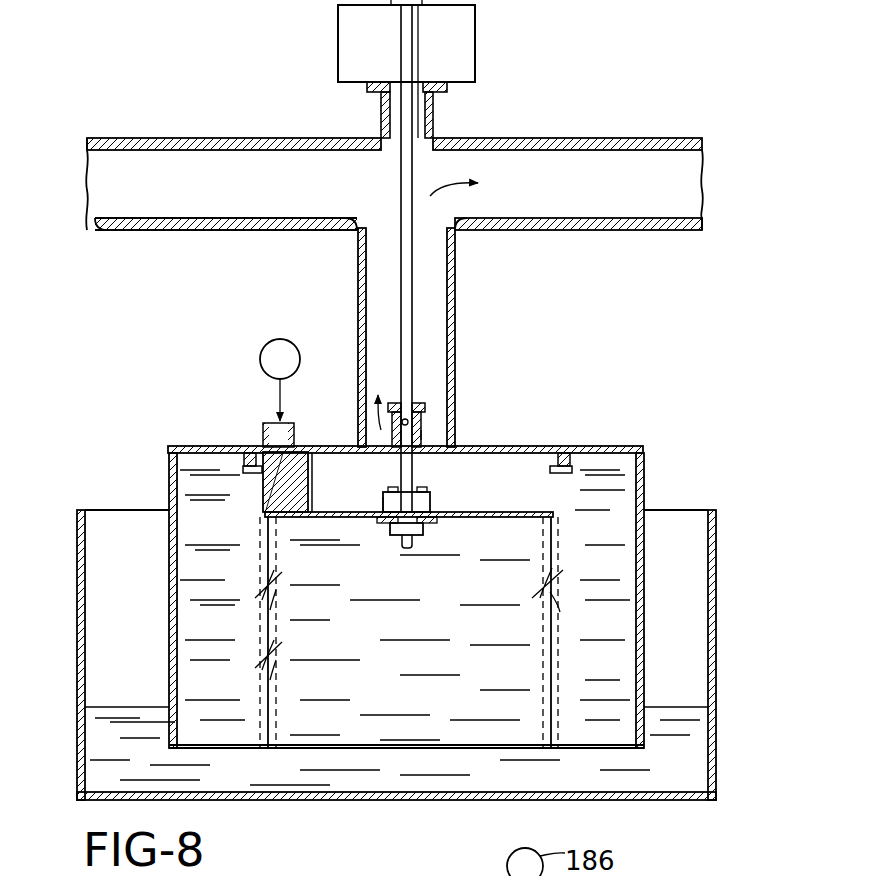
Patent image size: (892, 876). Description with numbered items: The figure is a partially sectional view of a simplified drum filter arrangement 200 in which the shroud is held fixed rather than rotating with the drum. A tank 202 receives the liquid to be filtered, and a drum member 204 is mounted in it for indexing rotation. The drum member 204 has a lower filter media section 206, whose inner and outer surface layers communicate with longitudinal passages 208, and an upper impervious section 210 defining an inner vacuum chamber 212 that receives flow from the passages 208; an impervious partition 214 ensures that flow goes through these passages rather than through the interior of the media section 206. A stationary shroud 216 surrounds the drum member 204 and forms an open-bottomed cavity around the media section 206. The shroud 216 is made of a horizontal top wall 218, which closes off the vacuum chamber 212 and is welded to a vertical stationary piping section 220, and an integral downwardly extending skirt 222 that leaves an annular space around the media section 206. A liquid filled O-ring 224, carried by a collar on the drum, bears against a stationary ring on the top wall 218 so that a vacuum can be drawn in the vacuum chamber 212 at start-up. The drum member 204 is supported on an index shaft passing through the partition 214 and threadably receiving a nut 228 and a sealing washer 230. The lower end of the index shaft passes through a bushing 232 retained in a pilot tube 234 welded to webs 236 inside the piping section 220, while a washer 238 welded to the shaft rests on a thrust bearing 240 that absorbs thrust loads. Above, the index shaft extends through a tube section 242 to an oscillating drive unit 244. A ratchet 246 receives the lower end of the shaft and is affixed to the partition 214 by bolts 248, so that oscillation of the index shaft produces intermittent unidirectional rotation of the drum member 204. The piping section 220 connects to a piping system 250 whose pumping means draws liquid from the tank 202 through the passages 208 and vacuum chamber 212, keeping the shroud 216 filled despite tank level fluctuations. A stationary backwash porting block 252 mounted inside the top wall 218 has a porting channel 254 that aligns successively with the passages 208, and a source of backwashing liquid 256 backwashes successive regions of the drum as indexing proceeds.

The drum filter arrangement 200 is at (127, 453).
The tank 202 is at (74, 540).
The drum member 204 is at (557, 668).
The lower filter media section 206 is at (555, 631).
The longitudinal passages 208 is at (550, 738).
The upper impervious section 210 is at (558, 501).
The inner vacuum chamber 212 is at (543, 500).
The impervious partition 214 is at (325, 512).
The stationary shroud 216 is at (167, 497).
The top wall 218 is at (193, 446).
The vertical stationary piping section 220 is at (456, 318).
The skirt 222 is at (175, 630).
The liquid filled O-ring 224 is at (250, 452).
The nut 228 is at (415, 529).
The sealing washer 230 is at (402, 546).
The bushing 232 is at (422, 422).
The pilot tube 234 is at (422, 437).
The webs 236 is at (432, 414).
The washer 238 is at (420, 405).
The thrust bearing 240 is at (390, 400).
The tube section 242 is at (435, 128).
The oscillating drive unit 244 is at (478, 41).
The ratchet 246 is at (383, 499).
The bolts 248 is at (435, 481).
The piping system 250 is at (286, 132).
The stationary backwash porting block 252 is at (305, 450).
The porting channel 254 is at (275, 497).
The source of backwashing liquid 256 is at (261, 355).